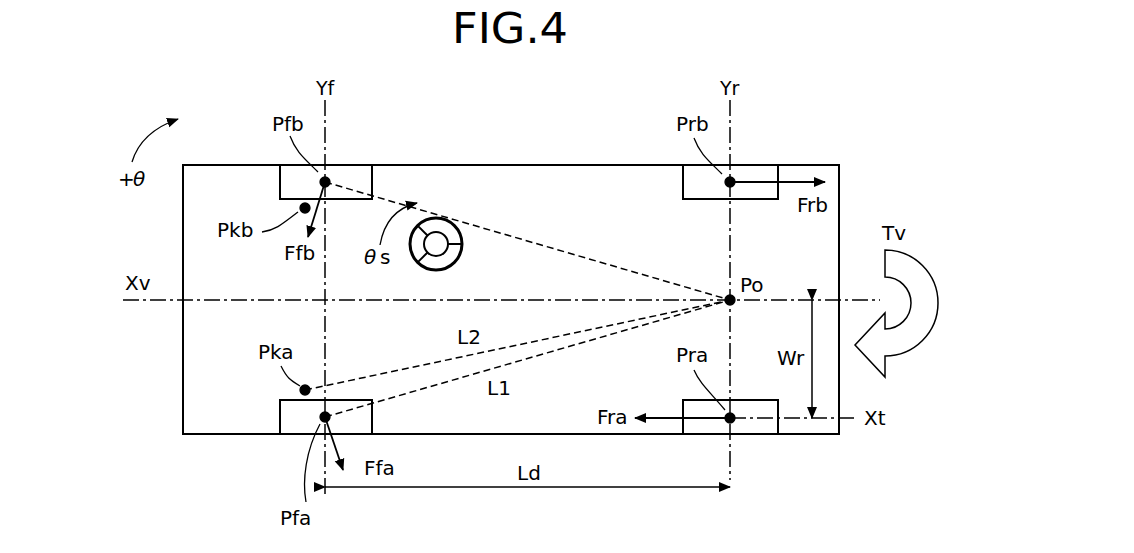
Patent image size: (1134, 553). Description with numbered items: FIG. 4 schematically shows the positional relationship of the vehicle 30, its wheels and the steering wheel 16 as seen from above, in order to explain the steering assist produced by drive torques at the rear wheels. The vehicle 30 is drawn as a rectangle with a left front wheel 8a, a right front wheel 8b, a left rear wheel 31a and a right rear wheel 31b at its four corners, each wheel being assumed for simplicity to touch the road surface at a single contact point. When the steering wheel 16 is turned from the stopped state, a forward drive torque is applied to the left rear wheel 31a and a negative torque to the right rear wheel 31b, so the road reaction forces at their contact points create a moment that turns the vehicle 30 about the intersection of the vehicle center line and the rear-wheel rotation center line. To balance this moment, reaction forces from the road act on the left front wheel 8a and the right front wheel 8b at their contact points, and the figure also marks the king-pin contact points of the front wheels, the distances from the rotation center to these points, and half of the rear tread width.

The vehicle 30 is at (510, 165).
The left front wheel 8a is at (298, 425).
The right front wheel 8b is at (355, 172).
The left rear wheel 31a is at (756, 425).
The right rear wheel 31b is at (758, 172).
The steering wheel 16 is at (462, 254).